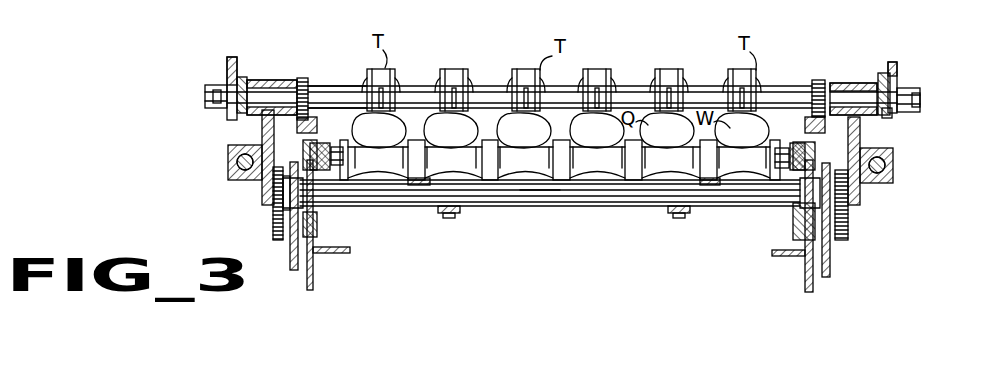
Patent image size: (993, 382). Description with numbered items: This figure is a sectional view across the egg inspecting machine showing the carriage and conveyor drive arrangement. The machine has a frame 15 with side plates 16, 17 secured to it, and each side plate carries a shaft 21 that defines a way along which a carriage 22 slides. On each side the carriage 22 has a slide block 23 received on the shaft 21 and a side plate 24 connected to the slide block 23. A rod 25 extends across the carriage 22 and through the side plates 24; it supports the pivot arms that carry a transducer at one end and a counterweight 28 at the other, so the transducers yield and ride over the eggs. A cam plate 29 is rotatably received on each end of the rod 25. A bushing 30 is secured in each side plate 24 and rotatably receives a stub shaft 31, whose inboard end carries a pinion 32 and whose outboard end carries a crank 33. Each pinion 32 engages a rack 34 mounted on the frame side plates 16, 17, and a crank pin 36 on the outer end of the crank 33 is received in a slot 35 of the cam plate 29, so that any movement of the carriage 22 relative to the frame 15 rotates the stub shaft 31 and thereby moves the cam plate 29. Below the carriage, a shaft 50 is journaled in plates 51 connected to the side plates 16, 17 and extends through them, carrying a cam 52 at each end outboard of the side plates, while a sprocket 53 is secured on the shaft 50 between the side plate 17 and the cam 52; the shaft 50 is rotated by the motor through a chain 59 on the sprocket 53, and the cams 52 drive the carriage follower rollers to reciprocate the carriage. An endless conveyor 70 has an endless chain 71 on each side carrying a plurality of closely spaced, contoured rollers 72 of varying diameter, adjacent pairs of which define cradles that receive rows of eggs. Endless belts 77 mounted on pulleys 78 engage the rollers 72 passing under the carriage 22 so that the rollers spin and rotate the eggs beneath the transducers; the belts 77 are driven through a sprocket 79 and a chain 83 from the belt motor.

The frame 15 is at (314, 278).
The side plate 16 is at (320, 245).
The side plate 17 is at (795, 245).
The shaft 21 is at (240, 164).
The carriage 22 is at (896, 52).
The slide block 23 is at (230, 153).
The side plate 24 is at (262, 188).
The rod 25 is at (625, 88).
The counterweight 28 is at (466, 78).
The cam plate 29 is at (232, 62).
The bushing 30 is at (286, 80).
The stub shaft 31 is at (256, 110).
The pinion 32 is at (306, 76).
The crank 33 is at (232, 100).
The rack 34 is at (318, 125).
The slot 35 is at (247, 76).
The crank pin 36 is at (227, 82).
The shaft 50 is at (545, 192).
The plate 51 is at (318, 222).
The cam 52 is at (279, 228).
The sprocket 53 is at (848, 216).
The chain 59 is at (814, 280).
The endless conveyor 70 is at (594, 165).
The endless chain 71 is at (318, 143).
The roller 72 is at (500, 170).
The endless belt 77 is at (412, 208).
The pulley 78 is at (422, 186).
The sprocket 79 is at (275, 208).
The chain 83 is at (290, 251).